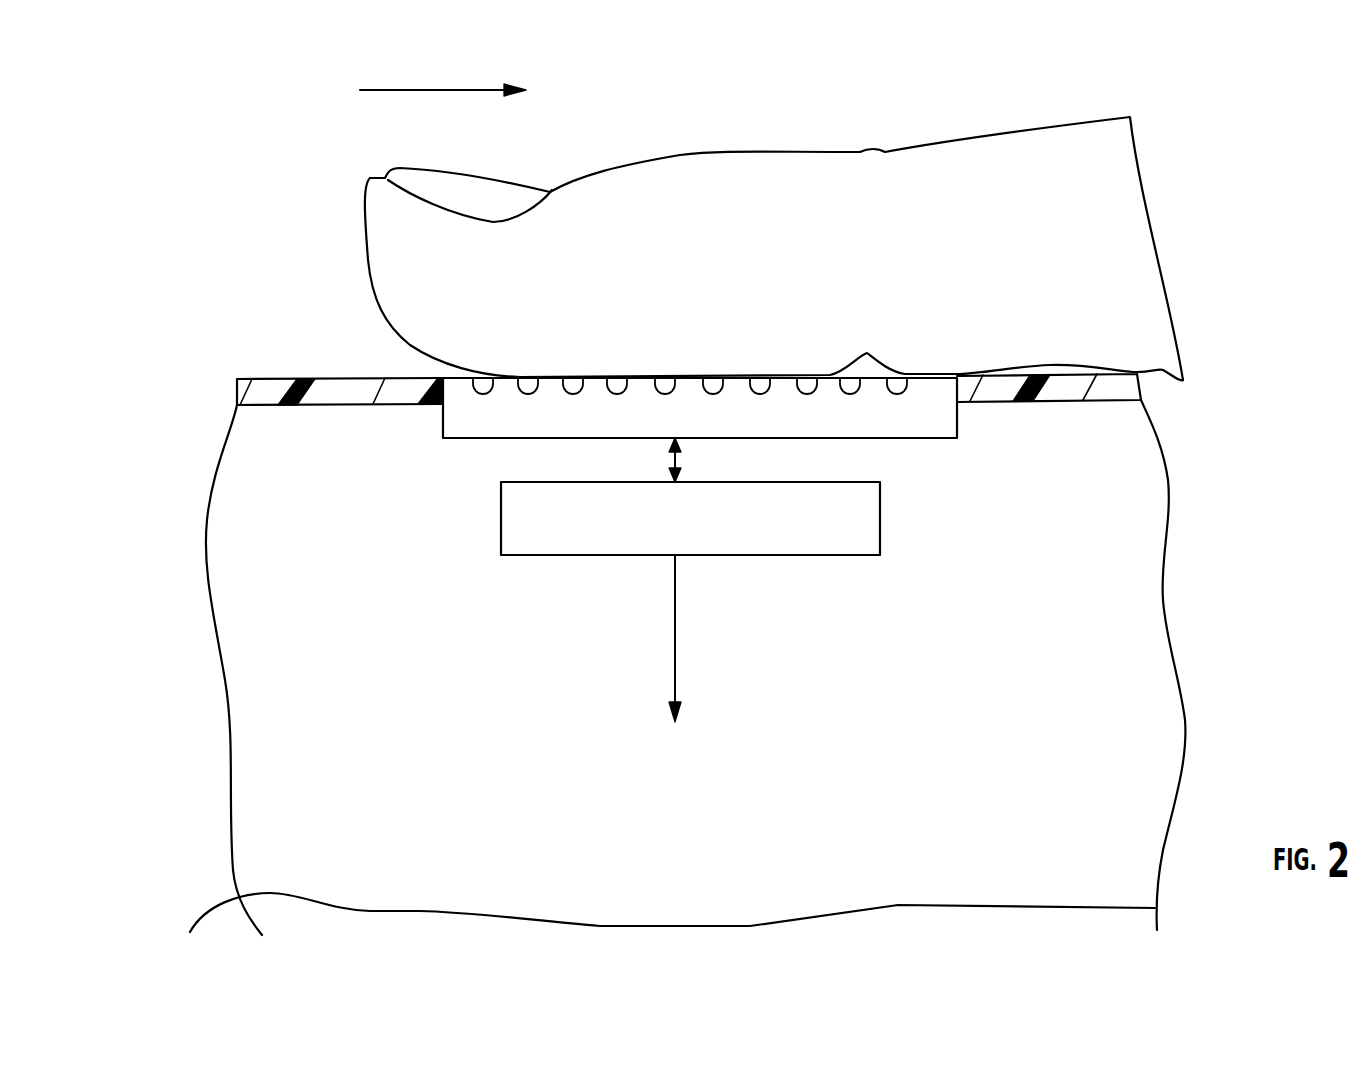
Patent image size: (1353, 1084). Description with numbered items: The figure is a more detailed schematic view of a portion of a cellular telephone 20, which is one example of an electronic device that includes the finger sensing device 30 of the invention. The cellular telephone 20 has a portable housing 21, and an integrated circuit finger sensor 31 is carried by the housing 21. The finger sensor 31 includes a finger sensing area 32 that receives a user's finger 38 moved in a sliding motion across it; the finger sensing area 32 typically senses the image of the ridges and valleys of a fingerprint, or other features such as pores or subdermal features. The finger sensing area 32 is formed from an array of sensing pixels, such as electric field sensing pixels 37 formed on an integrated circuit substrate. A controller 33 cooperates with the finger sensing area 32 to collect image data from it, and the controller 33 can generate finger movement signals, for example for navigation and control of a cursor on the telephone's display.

The cellular telephone 20 is at (258, 198).
The portable housing 21 is at (262, 378).
The finger sensing device 30 is at (500, 612).
The integrated circuit finger sensor 31 is at (428, 423).
The finger sensing area 32 is at (957, 412).
The controller 33 is at (880, 520).
The electric field sensing pixels 37 is at (840, 378).
The user's finger 38 is at (1043, 127).